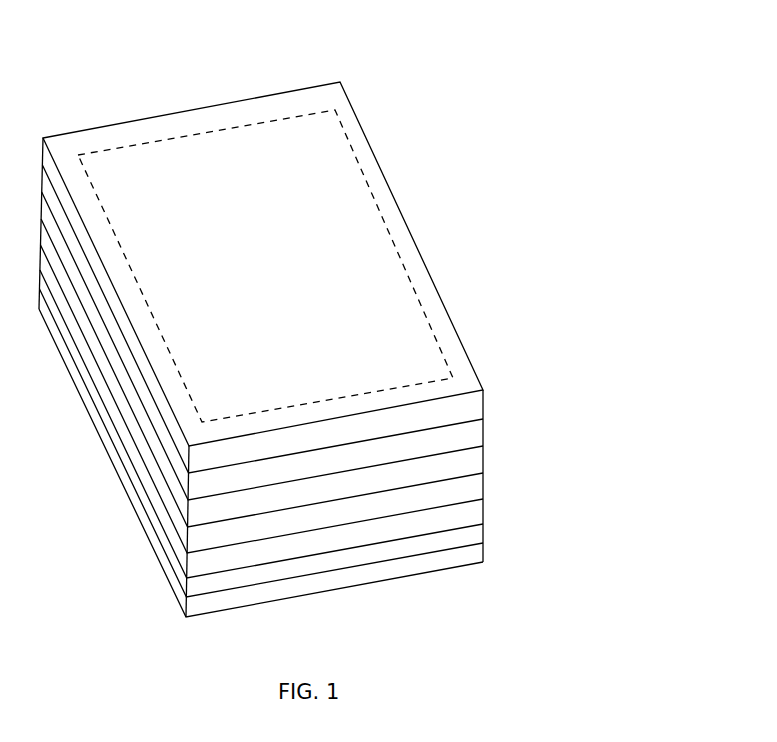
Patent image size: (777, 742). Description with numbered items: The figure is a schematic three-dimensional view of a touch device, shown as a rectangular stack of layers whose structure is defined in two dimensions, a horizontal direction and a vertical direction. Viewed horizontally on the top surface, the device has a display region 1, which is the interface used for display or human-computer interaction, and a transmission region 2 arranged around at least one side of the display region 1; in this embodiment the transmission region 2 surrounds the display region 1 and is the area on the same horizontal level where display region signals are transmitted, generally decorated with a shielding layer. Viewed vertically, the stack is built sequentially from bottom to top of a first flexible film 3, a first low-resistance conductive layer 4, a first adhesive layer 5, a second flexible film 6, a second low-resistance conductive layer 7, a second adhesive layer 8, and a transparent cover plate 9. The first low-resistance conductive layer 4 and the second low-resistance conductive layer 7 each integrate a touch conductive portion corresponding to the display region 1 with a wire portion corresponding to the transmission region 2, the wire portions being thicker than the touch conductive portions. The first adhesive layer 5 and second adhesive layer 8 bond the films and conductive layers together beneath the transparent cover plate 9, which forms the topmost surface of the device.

The display region 1 is at (271, 266).
The transmission region 2 is at (263, 243).
The first flexible film 3 is at (319, 463).
The first low-resistance conductive layer 4 is at (320, 443).
The first adhesive layer 5 is at (320, 424).
The second flexible film 6 is at (321, 399).
The second low-resistance conductive layer 7 is at (320, 373).
The second adhesive layer 8 is at (311, 346).
The transparent cover plate 9 is at (311, 319).